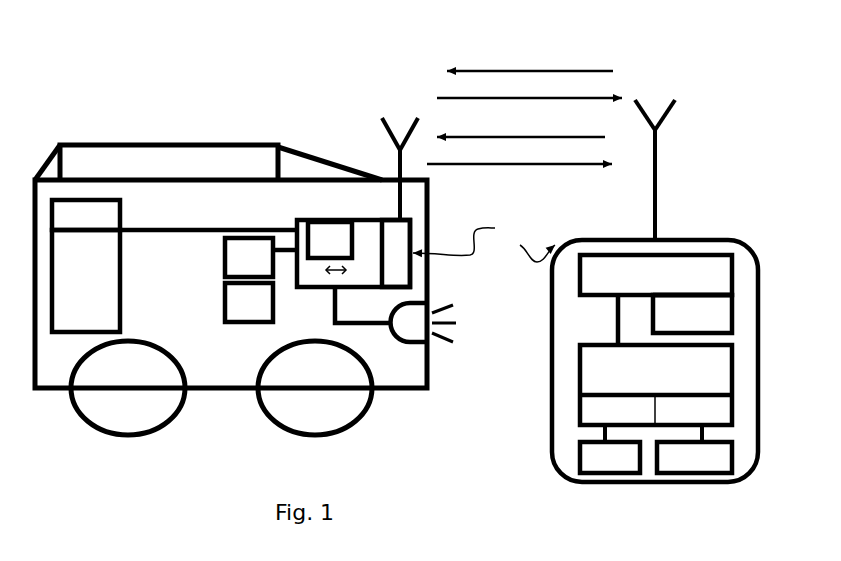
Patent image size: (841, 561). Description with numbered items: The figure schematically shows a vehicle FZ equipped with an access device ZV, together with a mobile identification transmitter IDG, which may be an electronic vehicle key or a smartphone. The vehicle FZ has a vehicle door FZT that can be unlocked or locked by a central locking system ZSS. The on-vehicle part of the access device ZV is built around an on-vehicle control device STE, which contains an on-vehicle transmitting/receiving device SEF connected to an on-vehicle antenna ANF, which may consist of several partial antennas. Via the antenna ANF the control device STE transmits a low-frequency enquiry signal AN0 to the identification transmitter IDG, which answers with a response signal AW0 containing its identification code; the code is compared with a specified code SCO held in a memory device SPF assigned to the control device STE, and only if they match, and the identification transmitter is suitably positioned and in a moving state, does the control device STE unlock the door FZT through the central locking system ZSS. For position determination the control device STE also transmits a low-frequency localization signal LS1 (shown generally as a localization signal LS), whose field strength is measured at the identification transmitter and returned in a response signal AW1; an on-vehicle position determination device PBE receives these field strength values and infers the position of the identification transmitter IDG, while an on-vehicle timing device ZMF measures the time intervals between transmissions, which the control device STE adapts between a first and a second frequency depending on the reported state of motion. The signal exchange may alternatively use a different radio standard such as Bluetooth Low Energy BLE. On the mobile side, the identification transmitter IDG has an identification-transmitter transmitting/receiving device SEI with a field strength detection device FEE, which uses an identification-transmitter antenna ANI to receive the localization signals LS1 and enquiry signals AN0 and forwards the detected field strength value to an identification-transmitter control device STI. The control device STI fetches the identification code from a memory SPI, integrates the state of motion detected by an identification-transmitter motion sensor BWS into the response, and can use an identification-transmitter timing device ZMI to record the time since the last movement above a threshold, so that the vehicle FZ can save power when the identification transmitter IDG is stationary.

The vehicle FZ is at (225, 391).
The central locking system ZSS is at (110, 199).
The vehicle door FZT is at (121, 287).
The on-vehicle timing device ZMF is at (223, 258).
The on-vehicle position determination device PBE is at (240, 326).
The memory device SPF is at (316, 219).
The on-vehicle control device STE is at (312, 290).
The specified code SCO is at (330, 240).
The on-vehicle transmitting/receiving device SEF is at (398, 250).
The on-vehicle antenna ANF is at (398, 168).
The Bluetooth Low Energy BLE is at (408, 346).
The localization signal LS is at (445, 346).
The response signal AW0 is at (530, 64).
The enquiry signal AN0 is at (529, 91).
The response signal AW1 is at (521, 130).
The localization signal LS1 is at (519, 157).
The access device ZV is at (484, 245).
The mobile identification transmitter IDG is at (560, 480).
The identification-transmitter antenna ANI is at (657, 183).
The field strength detection device FEE is at (733, 272).
The identification-transmitter transmitting/receiving device SEI is at (733, 297).
The memory SPI is at (733, 326).
The identification-transmitter control device STI is at (733, 367).
The identification-transmitter timing device ZMI is at (578, 457).
The identification-transmitter motion sensor BWS is at (734, 462).